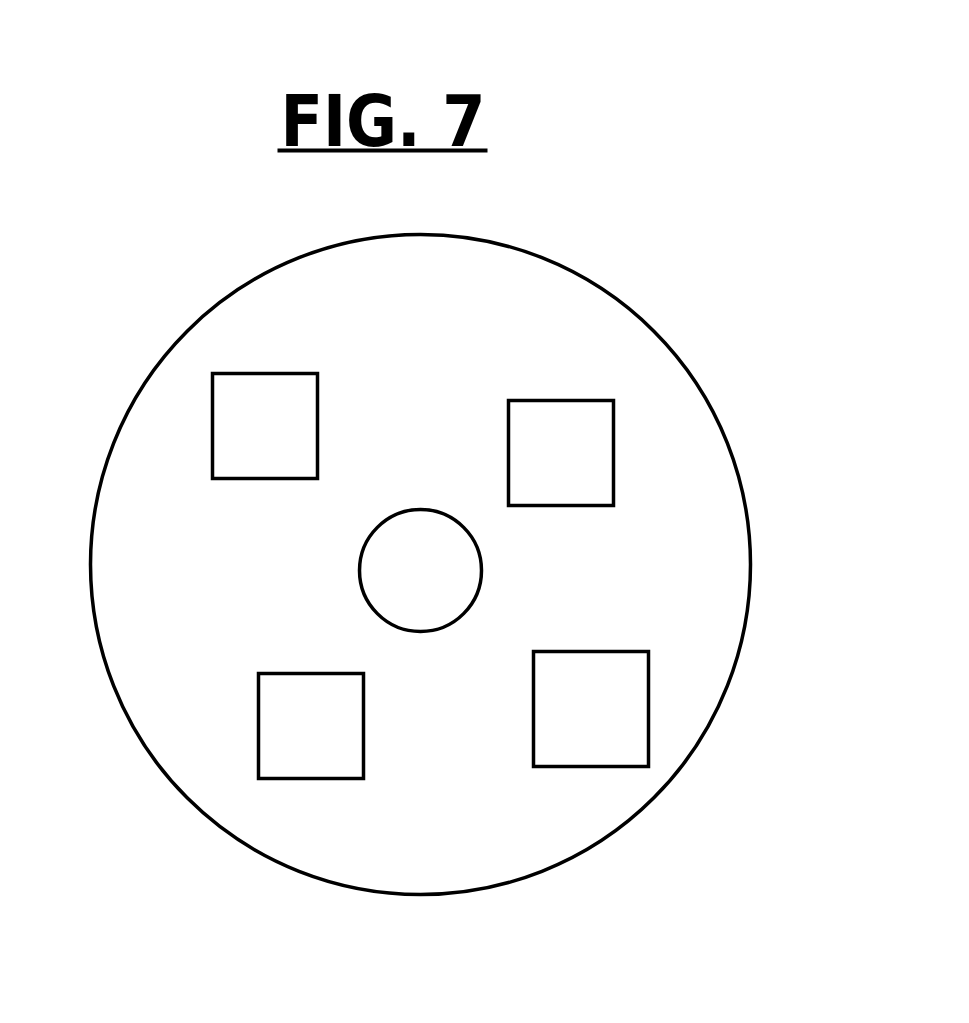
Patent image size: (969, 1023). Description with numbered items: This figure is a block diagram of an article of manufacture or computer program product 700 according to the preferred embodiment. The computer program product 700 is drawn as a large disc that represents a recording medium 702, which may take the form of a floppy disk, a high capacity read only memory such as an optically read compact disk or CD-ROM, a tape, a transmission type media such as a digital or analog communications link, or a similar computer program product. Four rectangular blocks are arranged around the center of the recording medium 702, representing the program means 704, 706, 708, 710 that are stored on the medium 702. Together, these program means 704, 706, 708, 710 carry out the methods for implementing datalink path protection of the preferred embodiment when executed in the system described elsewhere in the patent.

The computer program product 700 is at (709, 342).
The recording medium 702 is at (140, 371).
The program means 704 is at (311, 726).
The program means 706 is at (591, 709).
The program means 708 is at (561, 453).
The program means 710 is at (265, 426).